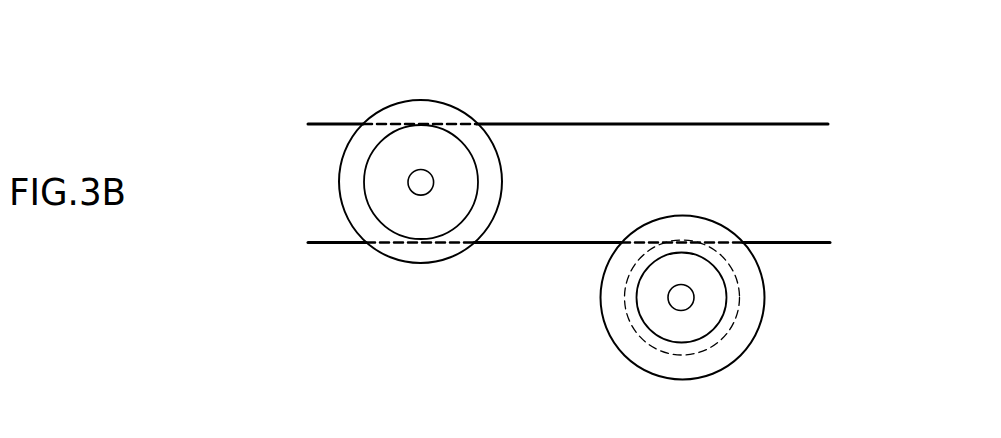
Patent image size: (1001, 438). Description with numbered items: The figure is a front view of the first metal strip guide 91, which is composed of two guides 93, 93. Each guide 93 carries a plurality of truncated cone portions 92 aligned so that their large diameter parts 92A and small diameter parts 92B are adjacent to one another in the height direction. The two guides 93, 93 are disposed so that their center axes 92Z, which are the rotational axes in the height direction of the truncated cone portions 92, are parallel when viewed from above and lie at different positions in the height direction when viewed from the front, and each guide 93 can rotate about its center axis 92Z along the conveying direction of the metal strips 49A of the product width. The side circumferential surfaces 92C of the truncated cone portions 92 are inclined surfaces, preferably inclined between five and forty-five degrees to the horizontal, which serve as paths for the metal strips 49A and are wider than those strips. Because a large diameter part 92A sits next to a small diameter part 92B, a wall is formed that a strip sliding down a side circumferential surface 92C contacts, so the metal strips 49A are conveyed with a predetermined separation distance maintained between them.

The first metal strip guide 91 is at (445, 77).
The truncated cone portion 92 is at (385, 110).
The large diameter part 92A is at (343, 207).
The small diameter part 92B is at (365, 183).
The side circumferential surface 92C is at (367, 143).
The center axis 92Z is at (418, 179).
The guide 93 is at (388, 265).
The metal strip of the product width 49A is at (653, 122).